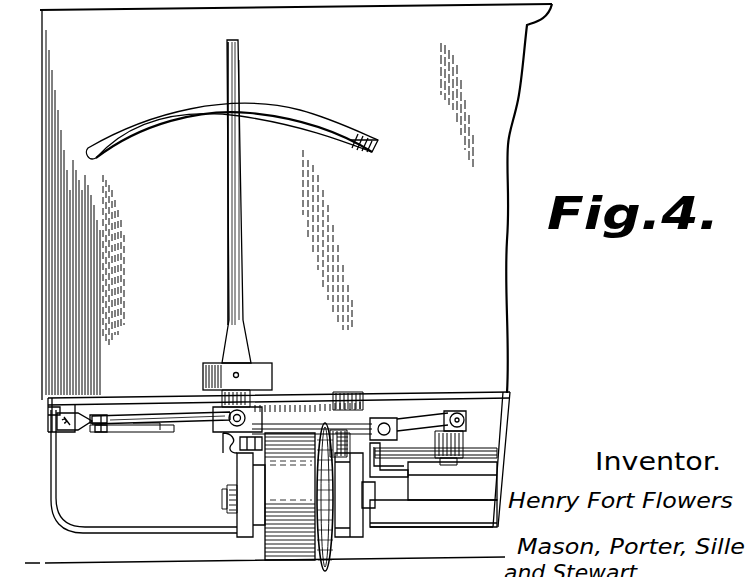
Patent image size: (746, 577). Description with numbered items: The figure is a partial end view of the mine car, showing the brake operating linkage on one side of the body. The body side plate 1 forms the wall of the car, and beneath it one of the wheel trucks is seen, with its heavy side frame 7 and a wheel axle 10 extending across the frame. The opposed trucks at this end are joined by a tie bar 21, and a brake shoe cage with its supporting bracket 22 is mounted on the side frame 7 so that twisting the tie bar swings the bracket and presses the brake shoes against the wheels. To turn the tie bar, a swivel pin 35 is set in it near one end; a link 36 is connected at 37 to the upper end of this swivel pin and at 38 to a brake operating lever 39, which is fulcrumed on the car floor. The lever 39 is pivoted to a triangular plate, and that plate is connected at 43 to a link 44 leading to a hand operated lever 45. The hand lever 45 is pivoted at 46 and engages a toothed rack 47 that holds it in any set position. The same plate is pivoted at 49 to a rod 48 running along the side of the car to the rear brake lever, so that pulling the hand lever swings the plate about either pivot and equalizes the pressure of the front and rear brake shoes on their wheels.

The side plate 1 is at (494, 143).
The toothed rack 47 is at (262, 110).
The hand operated lever 45 is at (244, 340).
The pivot 46 is at (242, 375).
The link 44 is at (173, 418).
The rod 48 is at (63, 418).
The pivot 49 is at (97, 422).
The connection 43 is at (113, 432).
The brake operating lever 39 is at (340, 430).
The connection 38 is at (378, 420).
The link 36 is at (417, 420).
The connection 37 is at (452, 414).
The swivel pin 35 is at (455, 448).
The tie bar 21 is at (498, 452).
The supporting bracket 22 is at (400, 473).
The wheel axle 10 is at (220, 497).
The side frame 7 is at (243, 527).